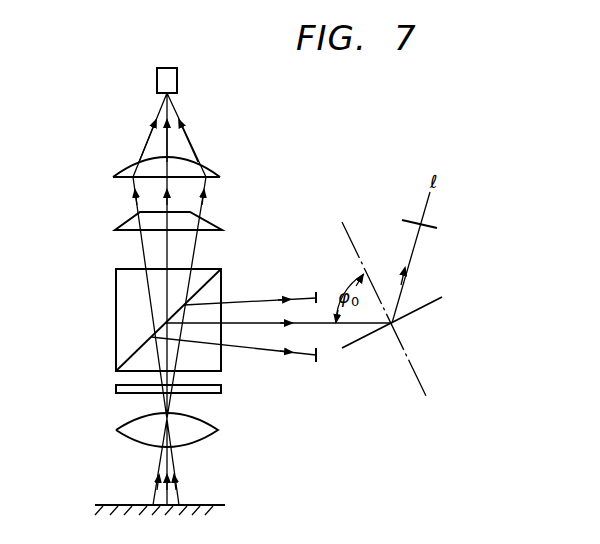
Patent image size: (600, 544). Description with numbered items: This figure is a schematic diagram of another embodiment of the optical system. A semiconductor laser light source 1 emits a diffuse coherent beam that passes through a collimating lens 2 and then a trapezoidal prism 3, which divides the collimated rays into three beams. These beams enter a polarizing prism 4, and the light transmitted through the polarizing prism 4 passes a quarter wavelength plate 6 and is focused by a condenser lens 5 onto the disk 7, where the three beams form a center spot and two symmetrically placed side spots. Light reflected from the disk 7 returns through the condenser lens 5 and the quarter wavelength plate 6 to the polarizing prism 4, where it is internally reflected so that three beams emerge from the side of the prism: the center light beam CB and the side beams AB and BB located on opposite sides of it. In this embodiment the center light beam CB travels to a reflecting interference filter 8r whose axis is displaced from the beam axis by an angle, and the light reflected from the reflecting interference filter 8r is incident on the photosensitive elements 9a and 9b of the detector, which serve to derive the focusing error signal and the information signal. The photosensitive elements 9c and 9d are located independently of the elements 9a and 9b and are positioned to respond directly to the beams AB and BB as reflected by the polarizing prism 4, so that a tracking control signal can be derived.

The semiconductor laser light source 1 is at (178, 85).
The collimating lens 2 is at (128, 168).
The trapezoidal prism 3 is at (128, 222).
The polarizing prism 4 is at (116, 303).
The condenser lens 5 is at (124, 437).
The quarter wavelength plate 6 is at (116, 388).
The disk 7 is at (197, 505).
The reflecting interference filter 8r is at (430, 305).
The photosensitive element 9a is at (437, 228).
The photosensitive element 9b is at (402, 218).
The photosensitive element 9c is at (316, 290).
The photosensitive element 9d is at (316, 365).
The beam AB is at (256, 300).
The beam BB is at (254, 352).
The center light beam CB is at (327, 326).